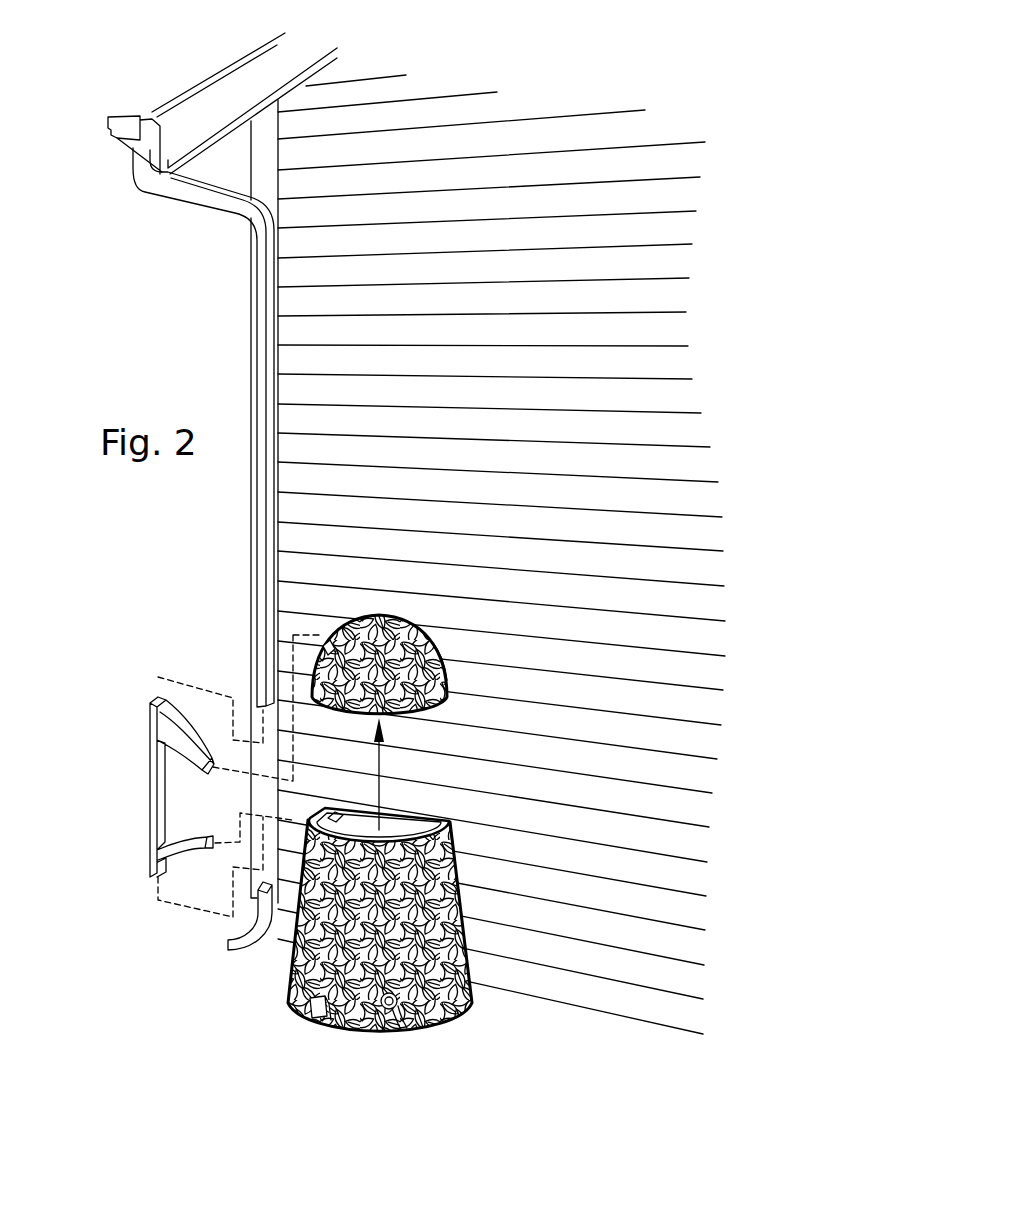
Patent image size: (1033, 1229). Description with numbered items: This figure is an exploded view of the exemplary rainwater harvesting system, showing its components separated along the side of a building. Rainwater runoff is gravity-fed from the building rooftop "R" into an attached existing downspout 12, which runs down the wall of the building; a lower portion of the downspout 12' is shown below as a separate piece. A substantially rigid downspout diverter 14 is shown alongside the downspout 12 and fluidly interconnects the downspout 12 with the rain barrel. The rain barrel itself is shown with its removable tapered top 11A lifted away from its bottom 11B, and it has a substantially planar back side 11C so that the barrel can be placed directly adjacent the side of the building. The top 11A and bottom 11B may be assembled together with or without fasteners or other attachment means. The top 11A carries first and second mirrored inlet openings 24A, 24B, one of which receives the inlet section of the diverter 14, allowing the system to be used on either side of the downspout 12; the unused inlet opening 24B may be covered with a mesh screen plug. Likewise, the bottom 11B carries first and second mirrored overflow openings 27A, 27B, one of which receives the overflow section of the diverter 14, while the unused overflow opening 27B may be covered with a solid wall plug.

The building rooftop R is at (183, 93).
The downspout 12 is at (199, 427).
The lower downspout section 12' is at (235, 937).
The downspout diverter 14 is at (140, 802).
The top 11A is at (404, 622).
The bottom 11B is at (461, 897).
The back side 11C is at (418, 813).
The first inlet opening 24A is at (327, 647).
The second inlet opening 24B is at (448, 647).
The first overflow opening 27A is at (351, 813).
The second overflow opening 27B is at (459, 864).